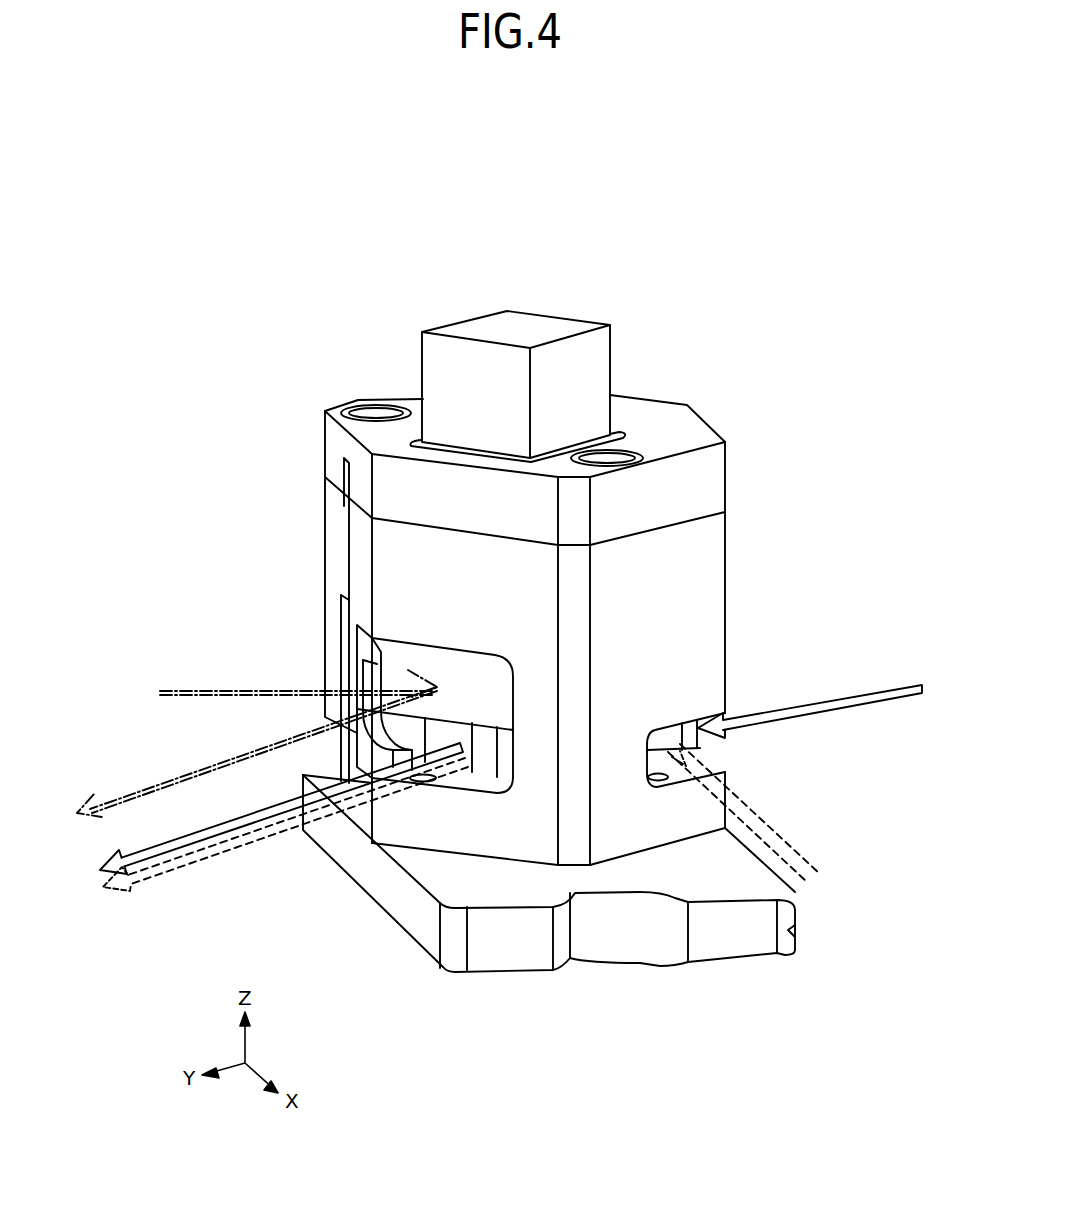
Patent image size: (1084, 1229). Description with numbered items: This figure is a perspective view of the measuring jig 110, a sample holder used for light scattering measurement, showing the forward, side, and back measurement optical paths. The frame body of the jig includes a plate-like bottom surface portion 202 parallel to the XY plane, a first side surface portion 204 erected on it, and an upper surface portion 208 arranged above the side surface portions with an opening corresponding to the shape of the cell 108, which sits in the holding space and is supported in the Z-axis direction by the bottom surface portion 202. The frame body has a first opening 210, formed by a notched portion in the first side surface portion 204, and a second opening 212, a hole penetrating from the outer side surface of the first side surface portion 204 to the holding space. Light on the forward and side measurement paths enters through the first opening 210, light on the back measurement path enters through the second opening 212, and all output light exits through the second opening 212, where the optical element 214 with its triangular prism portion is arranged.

The measuring jig 110 is at (646, 186).
The cell 108 is at (563, 328).
The upper surface portion 208 is at (727, 463).
The first side surface portion 204 is at (727, 606).
The optical element 214 is at (402, 657).
The first opening 210 is at (708, 746).
The second opening 212 is at (454, 777).
The bottom surface portion 202 is at (790, 954).